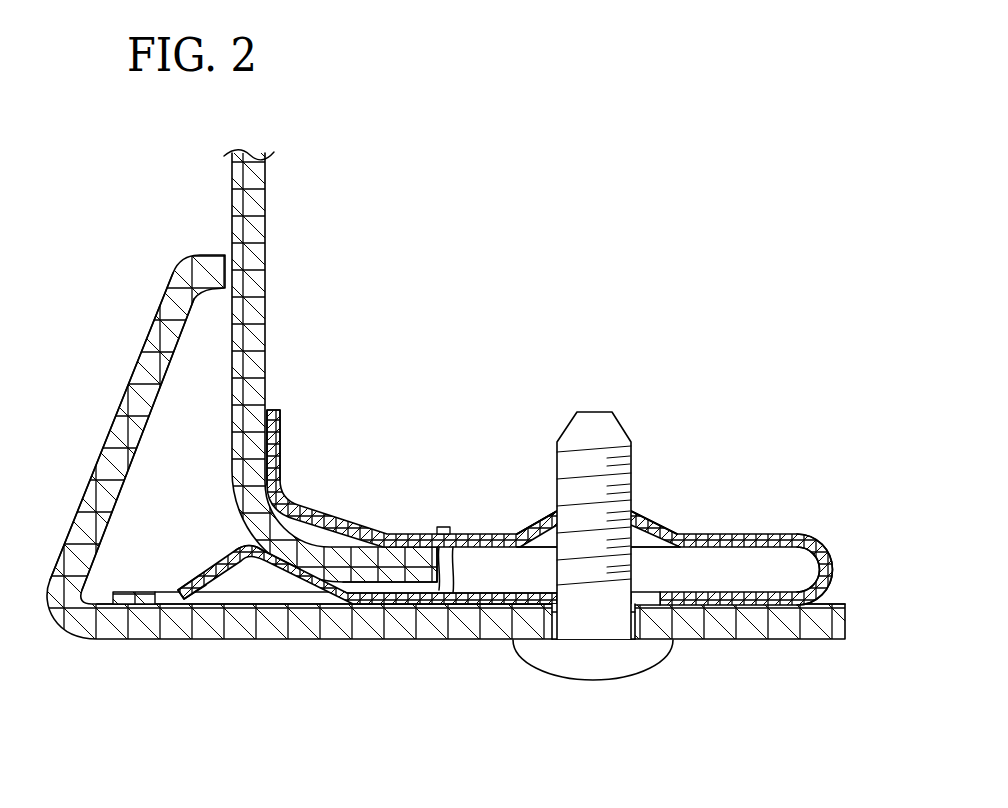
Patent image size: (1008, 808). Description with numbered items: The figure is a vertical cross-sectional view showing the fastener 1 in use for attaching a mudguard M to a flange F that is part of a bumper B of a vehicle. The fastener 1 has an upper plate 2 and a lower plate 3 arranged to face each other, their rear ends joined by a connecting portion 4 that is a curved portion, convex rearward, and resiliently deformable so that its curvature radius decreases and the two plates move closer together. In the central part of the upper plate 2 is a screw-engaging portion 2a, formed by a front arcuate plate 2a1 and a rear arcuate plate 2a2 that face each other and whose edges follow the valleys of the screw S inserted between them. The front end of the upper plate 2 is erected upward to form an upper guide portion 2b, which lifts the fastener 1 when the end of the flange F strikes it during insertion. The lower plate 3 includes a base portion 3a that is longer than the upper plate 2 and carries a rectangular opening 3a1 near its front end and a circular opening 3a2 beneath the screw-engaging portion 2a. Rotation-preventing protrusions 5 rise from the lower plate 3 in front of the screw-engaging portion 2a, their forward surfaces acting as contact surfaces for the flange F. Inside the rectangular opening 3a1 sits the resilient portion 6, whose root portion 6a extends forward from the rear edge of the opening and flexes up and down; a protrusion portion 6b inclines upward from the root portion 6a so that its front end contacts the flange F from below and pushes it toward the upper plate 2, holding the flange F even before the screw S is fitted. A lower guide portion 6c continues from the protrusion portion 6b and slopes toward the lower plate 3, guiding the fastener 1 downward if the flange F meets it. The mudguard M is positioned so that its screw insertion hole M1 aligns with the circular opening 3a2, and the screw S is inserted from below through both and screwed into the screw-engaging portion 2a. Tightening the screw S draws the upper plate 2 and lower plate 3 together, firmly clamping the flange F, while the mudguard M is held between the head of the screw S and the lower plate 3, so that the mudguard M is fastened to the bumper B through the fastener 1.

The fastener 1 is at (723, 188).
The upper plate 2 is at (427, 537).
The screw-engaging portion 2a is at (638, 500).
The front arcuate plate 2a1 is at (540, 530).
The rear arcuate plate 2a2 is at (658, 522).
The upper guide portion 2b is at (277, 409).
The lower plate 3 is at (503, 607).
The base portion 3a is at (477, 606).
The rectangular opening 3a1 is at (162, 606).
The circular opening 3a2 is at (540, 603).
The connecting portion 4 is at (813, 536).
The rotation-preventing protrusions 5 is at (451, 566).
The resilient portion 6 is at (292, 589).
The root portion 6a is at (388, 598).
The protrusion portion 6b is at (282, 567).
The lower guide portion 6c is at (191, 584).
The bumper B is at (259, 329).
The flange F is at (397, 558).
The mudguard M is at (137, 371).
The screw insertion hole M1 is at (616, 623).
The screw S is at (592, 683).